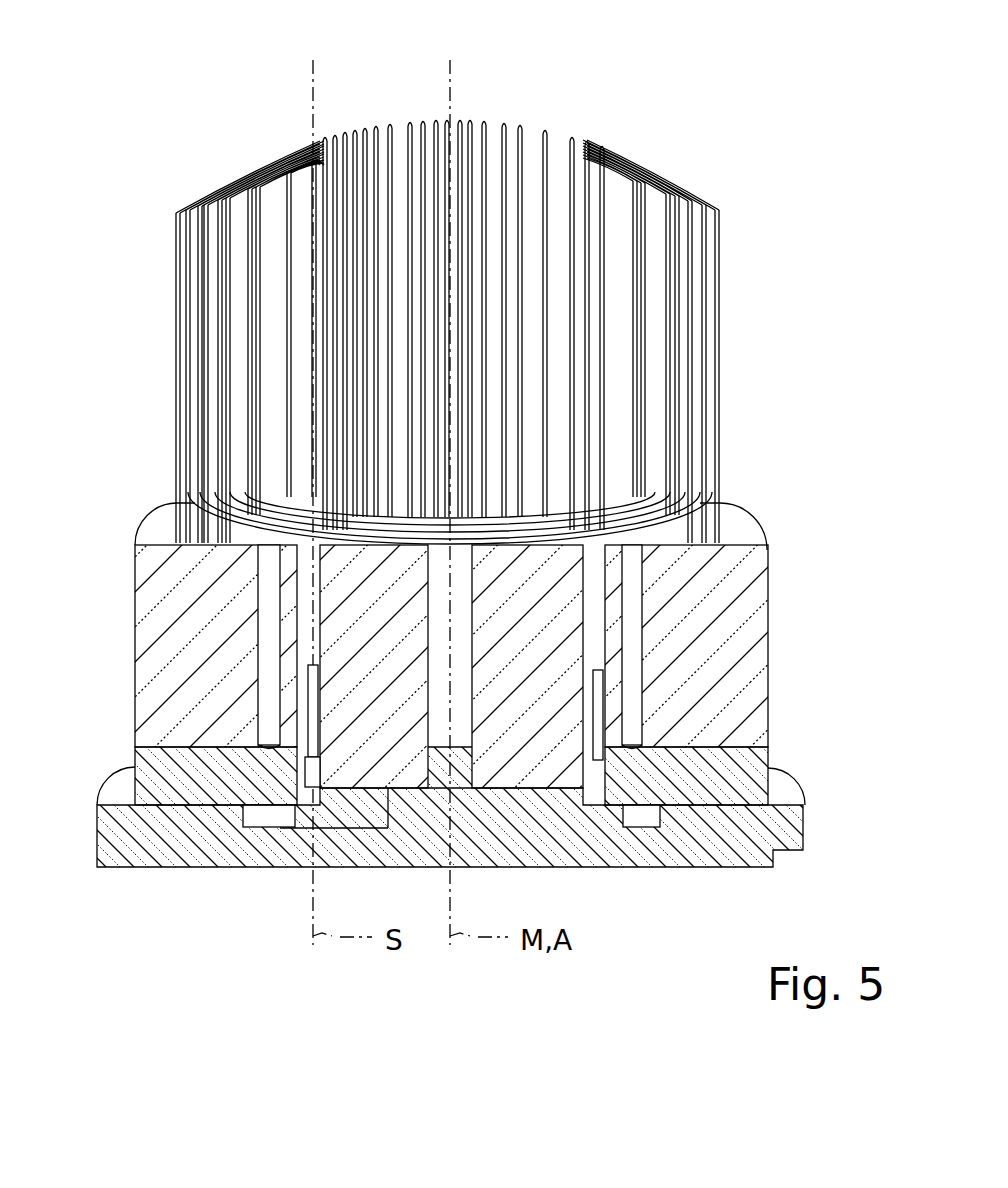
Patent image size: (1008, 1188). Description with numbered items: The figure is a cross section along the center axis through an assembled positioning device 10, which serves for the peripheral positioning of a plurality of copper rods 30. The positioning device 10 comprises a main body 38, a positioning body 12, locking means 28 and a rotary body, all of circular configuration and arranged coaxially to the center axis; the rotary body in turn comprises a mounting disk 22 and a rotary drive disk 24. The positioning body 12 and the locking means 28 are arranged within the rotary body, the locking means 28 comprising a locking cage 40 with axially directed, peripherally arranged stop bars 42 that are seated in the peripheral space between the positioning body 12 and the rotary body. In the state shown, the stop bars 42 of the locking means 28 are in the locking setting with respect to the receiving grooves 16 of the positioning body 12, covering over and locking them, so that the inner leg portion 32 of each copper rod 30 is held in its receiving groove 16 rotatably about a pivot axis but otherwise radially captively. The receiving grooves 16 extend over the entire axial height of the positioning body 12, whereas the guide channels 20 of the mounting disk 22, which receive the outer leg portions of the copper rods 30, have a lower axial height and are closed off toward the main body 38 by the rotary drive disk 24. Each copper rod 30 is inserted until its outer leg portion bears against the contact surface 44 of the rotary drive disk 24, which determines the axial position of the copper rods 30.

The positioning device 10 is at (205, 152).
The positioning body 12 is at (547, 647).
The receiving grooves 16 is at (588, 770).
The guide channel 20 is at (275, 660).
The mounting disk 22 is at (210, 590).
The rotary drive disk 24 is at (742, 773).
The locking means 28 is at (285, 814).
The copper rod 30 is at (320, 218).
The leg portion 32 is at (322, 398).
The main body 38 is at (780, 827).
The locking cage 40 is at (302, 771).
The stop bars 42 is at (300, 718).
The contact surface 44 is at (627, 742).